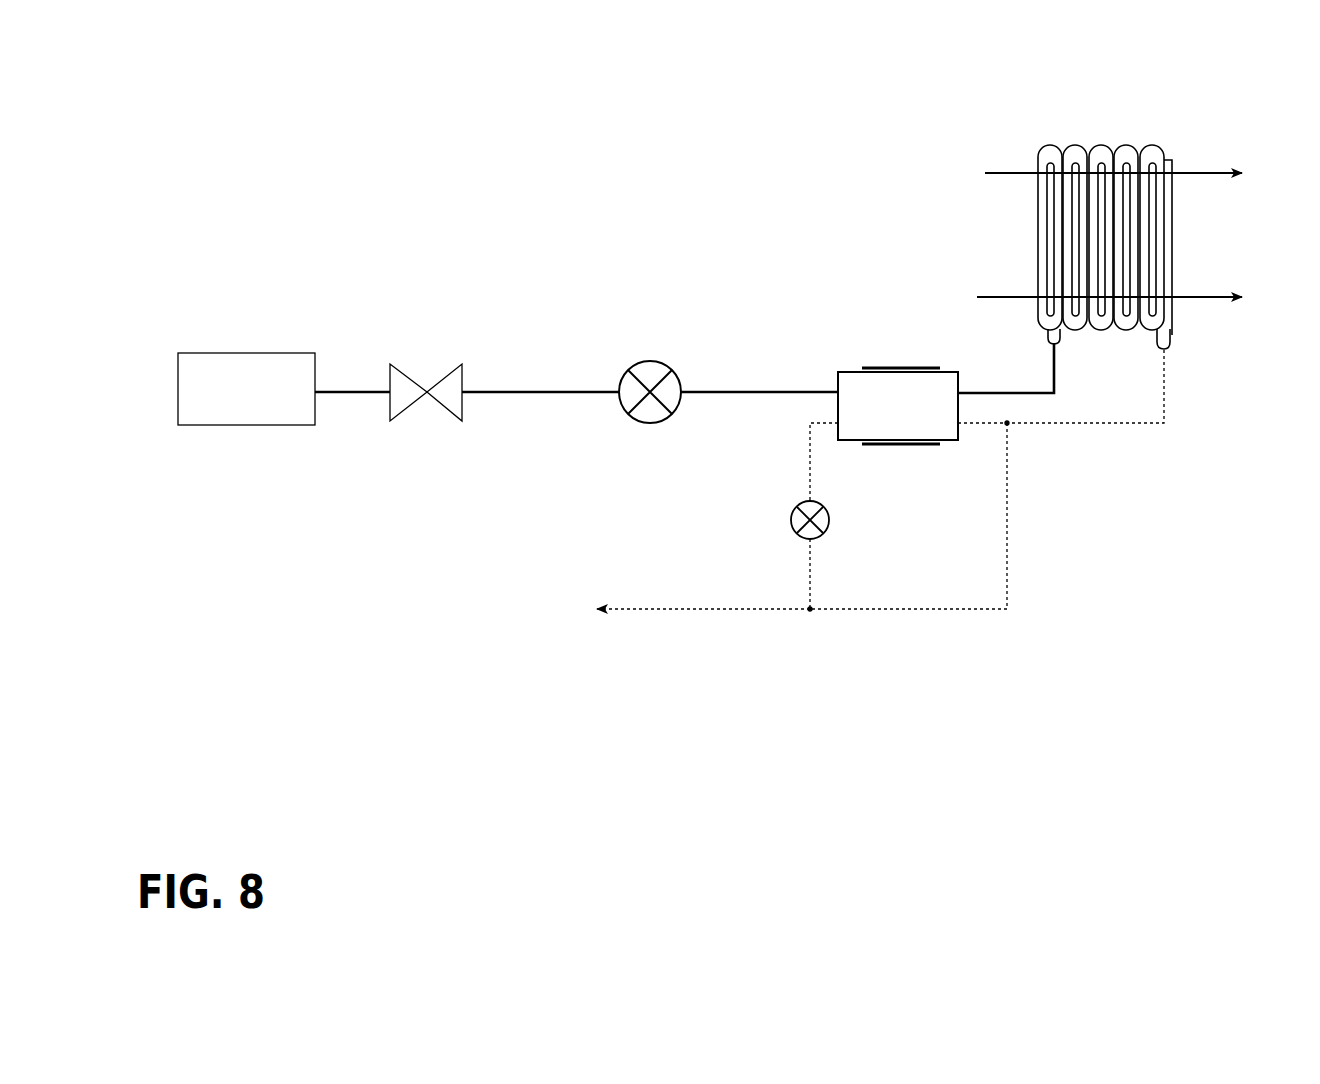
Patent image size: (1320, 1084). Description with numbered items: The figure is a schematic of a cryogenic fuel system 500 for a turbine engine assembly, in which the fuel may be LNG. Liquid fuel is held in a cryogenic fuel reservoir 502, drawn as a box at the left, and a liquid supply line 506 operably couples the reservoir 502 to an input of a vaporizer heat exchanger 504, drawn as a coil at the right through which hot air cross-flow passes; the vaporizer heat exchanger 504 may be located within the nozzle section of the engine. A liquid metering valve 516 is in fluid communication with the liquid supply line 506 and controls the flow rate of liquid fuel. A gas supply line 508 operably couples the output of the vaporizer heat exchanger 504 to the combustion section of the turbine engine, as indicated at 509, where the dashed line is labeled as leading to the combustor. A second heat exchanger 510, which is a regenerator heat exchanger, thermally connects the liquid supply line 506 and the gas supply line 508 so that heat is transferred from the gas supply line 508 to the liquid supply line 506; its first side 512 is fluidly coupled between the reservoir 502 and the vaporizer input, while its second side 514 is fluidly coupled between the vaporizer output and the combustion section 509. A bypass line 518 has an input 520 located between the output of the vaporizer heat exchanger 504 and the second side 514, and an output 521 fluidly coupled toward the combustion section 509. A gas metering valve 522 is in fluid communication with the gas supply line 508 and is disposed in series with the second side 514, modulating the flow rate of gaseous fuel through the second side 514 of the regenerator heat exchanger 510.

The cryogenic fuel system 500 is at (729, 232).
The cryogenic fuel reservoir 502 is at (273, 352).
The vaporizer heat exchanger 504 is at (1162, 148).
The liquid supply line 506 is at (723, 387).
The gas supply line 508 is at (1136, 424).
The combustion section connection 509 is at (598, 614).
The second heat exchanger 510 is at (845, 370).
The first side 512 is at (899, 365).
The second side 514 is at (900, 446).
The liquid metering valve 516 is at (632, 363).
The bypass line 518 is at (1012, 510).
The input 520 is at (1009, 425).
The output 521 is at (810, 612).
The gas metering valve 522 is at (800, 503).